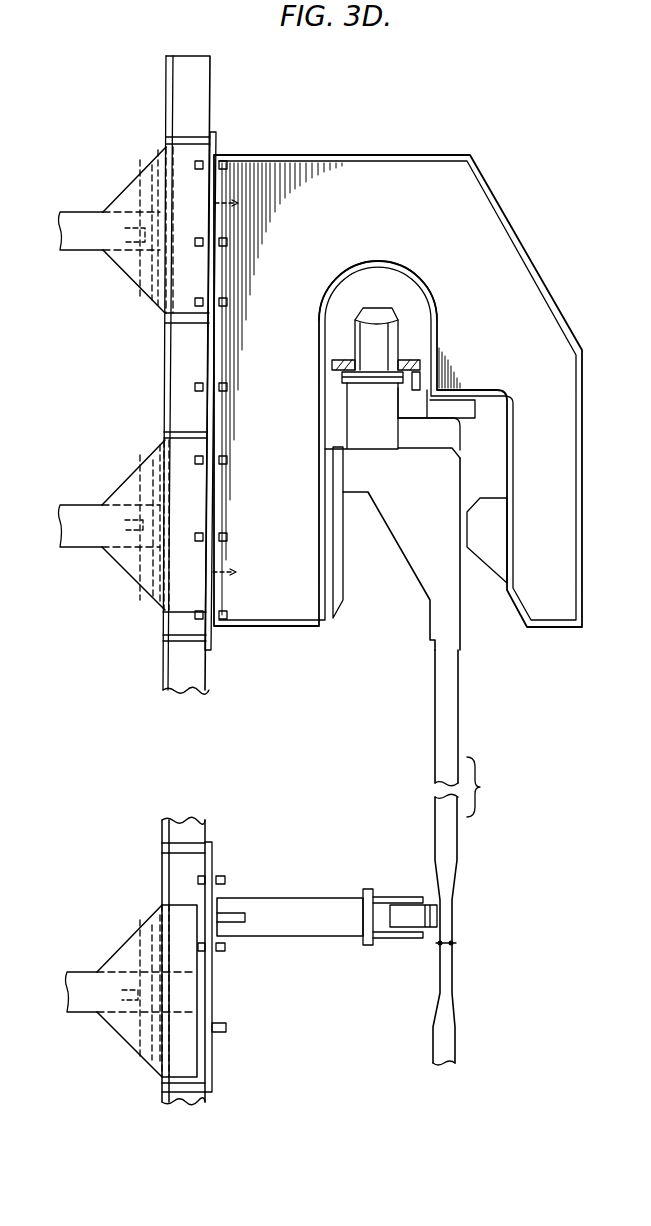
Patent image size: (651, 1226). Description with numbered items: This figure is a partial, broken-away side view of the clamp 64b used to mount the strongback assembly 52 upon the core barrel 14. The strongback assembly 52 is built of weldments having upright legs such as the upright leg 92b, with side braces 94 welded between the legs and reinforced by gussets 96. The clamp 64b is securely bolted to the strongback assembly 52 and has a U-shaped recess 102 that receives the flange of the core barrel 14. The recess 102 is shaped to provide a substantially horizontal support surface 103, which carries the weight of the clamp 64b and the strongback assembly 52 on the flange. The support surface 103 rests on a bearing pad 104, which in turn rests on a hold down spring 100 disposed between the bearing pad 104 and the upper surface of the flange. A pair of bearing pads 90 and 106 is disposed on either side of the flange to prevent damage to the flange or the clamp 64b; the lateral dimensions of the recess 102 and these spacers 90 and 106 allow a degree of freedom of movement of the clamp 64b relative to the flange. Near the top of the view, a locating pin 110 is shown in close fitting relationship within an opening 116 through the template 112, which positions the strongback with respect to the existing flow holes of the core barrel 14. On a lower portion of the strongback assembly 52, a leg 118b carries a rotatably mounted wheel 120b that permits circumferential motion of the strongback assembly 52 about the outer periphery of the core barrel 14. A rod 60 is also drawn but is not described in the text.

The strongback assembly 52 is at (162, 95).
The upright leg 92b is at (207, 111).
The gusset 96 is at (125, 190).
The side brace 94 is at (75, 212).
The clamp 64b is at (502, 236).
The U-shaped recess 102 is at (320, 315).
The locating pin 110 is at (397, 318).
The opening 116 is at (398, 362).
The template 112 is at (424, 377).
The support surface 103 is at (472, 394).
The bearing pad 104 is at (475, 406).
The hold down spring 100 is at (447, 443).
The bearing pad 106 is at (493, 517).
The rod 60 is at (355, 480).
The bearing pad 90 is at (333, 605).
The core barrel 14 is at (435, 757).
The leg 118b is at (297, 908).
The wheel 120b is at (408, 897).